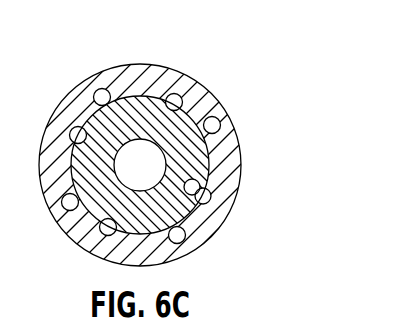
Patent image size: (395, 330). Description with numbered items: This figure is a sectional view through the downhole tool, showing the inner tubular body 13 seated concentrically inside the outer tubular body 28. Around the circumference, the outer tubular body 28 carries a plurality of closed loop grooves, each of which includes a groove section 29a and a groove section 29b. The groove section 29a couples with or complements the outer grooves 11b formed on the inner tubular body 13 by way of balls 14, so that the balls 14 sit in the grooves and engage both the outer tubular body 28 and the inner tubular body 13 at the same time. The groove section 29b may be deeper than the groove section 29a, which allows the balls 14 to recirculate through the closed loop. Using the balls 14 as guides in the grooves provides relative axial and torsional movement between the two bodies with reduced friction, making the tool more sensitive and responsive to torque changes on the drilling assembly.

The inner tubular body 13 is at (241, 143).
The balls 14 is at (184, 242).
The outer tubular body 28 is at (205, 88).
The groove section 29a is at (176, 93).
The groove section 29b is at (102, 88).
The outer grooves 11b is at (211, 190).